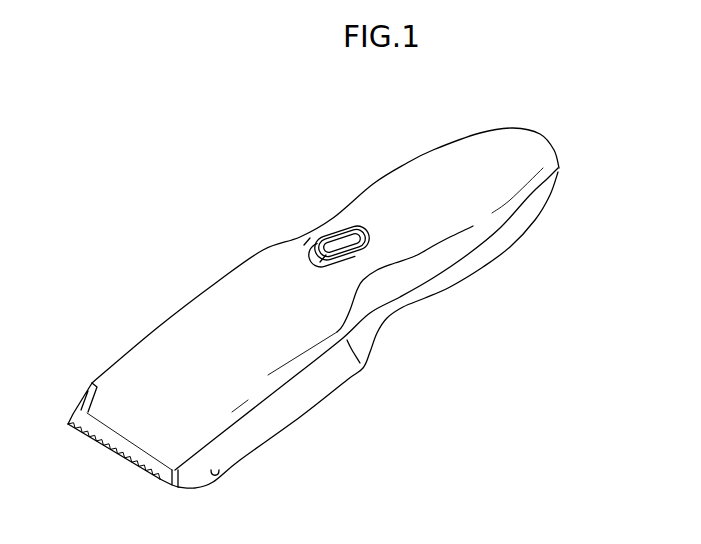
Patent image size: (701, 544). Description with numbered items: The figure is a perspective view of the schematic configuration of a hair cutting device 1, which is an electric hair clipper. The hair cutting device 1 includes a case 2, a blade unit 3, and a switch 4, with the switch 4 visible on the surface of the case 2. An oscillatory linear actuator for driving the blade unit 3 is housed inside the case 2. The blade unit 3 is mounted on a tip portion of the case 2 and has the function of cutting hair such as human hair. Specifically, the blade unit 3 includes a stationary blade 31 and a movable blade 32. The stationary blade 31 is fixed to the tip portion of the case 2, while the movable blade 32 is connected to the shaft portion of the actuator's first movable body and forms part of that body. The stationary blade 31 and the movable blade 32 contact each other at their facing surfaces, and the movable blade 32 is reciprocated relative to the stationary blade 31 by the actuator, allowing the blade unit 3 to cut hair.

The hair cutting device 1 is at (576, 165).
The case 2 is at (227, 290).
The blade unit 3 is at (62, 458).
The stationary blade 31 is at (167, 482).
The movable blade 32 is at (150, 462).
The switch 4 is at (330, 240).